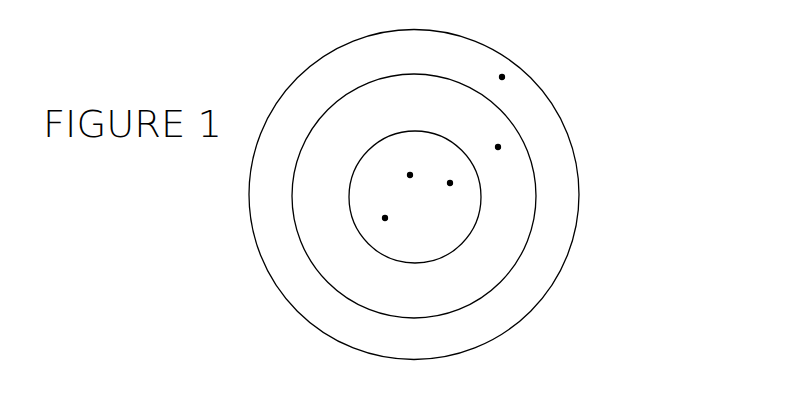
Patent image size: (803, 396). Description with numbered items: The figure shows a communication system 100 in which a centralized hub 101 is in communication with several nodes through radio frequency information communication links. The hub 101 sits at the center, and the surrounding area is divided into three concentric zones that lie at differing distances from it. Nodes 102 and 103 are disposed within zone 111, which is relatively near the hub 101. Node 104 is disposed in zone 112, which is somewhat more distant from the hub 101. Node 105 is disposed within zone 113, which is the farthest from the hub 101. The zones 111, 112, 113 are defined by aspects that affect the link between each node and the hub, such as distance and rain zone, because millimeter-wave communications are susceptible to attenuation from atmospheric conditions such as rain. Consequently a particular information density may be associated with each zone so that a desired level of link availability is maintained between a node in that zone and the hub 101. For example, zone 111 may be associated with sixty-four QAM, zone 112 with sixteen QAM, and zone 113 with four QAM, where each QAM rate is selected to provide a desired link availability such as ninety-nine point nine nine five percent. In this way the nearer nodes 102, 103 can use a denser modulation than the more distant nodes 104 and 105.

The communication system 100 is at (598, 123).
The centralized hub 101 is at (410, 175).
The node 102 is at (385, 218).
The node 103 is at (450, 183).
The node 104 is at (498, 147).
The node 105 is at (502, 77).
The zone 111 is at (354, 229).
The zone 112 is at (455, 316).
The zone 113 is at (248, 187).